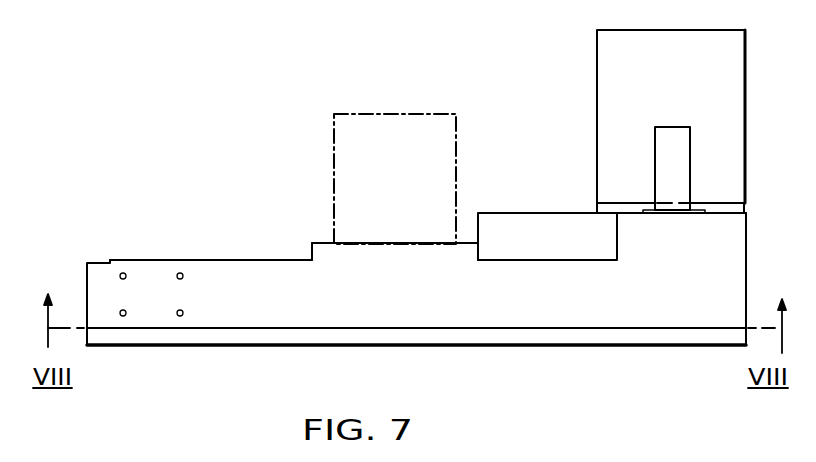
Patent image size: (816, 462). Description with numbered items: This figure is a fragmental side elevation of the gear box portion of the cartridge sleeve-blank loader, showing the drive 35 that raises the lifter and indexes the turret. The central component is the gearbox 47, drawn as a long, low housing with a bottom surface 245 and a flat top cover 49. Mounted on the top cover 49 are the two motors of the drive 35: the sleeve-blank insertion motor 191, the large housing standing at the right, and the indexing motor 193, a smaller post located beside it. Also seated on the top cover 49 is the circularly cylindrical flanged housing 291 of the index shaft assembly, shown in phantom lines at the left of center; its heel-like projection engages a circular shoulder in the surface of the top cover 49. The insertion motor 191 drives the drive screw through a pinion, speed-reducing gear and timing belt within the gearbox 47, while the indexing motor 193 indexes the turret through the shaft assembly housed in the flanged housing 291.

The gearbox 47 is at (152, 302).
The top cover 49 is at (230, 258).
The drive 35 is at (733, 258).
The bottom surface 245 is at (487, 347).
The flanged housing 291 is at (334, 160).
The sleeve-blank insertion motor 191 is at (713, 66).
The indexing motor 193 is at (660, 143).